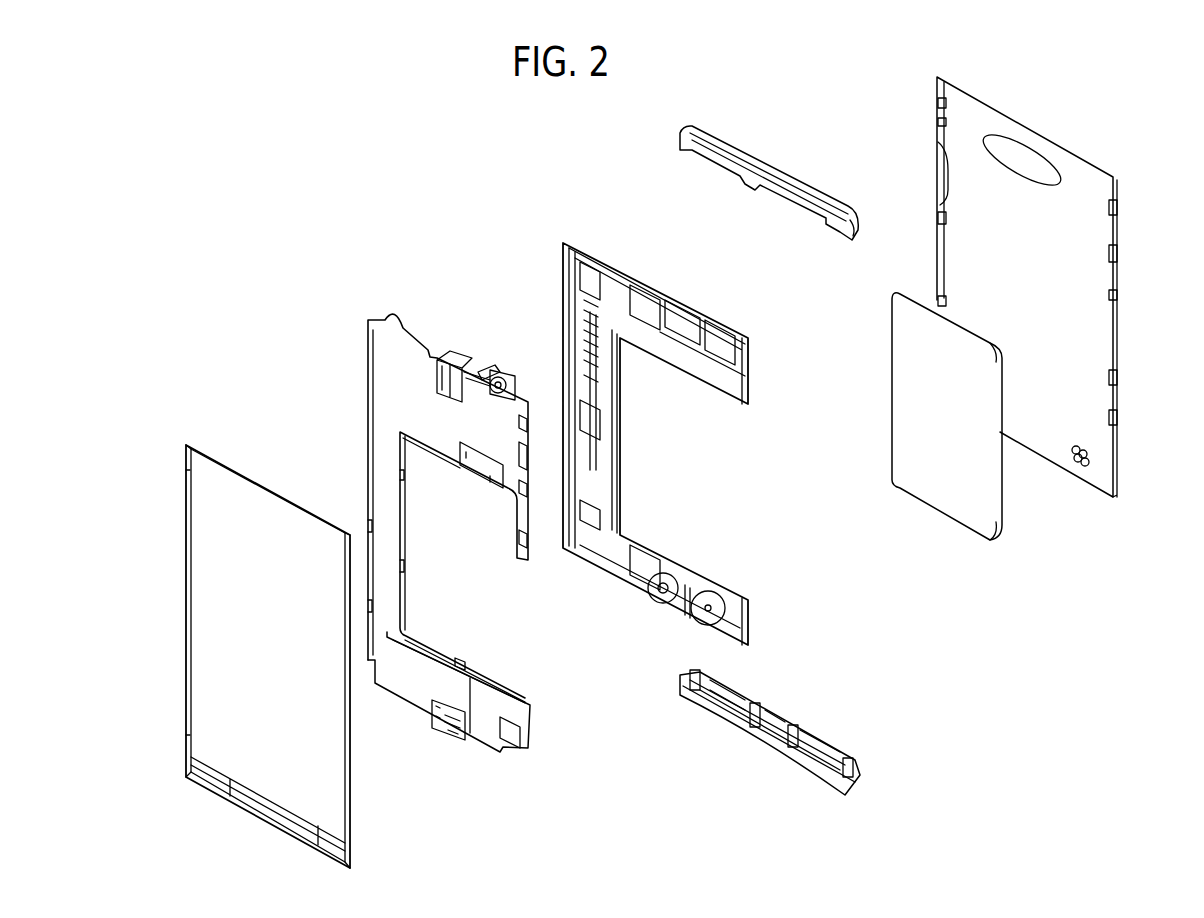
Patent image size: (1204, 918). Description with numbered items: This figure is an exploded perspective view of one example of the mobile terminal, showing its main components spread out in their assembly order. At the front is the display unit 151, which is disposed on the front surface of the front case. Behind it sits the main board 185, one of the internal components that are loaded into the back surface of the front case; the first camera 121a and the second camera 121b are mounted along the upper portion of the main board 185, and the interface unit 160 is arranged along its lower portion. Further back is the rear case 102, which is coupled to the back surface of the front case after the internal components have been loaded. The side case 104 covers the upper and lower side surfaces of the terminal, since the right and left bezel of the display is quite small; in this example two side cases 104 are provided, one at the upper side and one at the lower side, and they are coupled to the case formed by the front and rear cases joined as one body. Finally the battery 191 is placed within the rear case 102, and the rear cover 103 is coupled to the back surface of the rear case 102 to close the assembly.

The display unit 151 is at (252, 490).
The main board 185 is at (413, 348).
The second camera 121b is at (455, 372).
The first camera 121a is at (500, 380).
The interface unit 160 is at (413, 690).
The rear case 102 is at (705, 620).
The side case 104 is at (823, 217).
The rear cover 103 is at (1083, 350).
The battery 191 is at (978, 520).